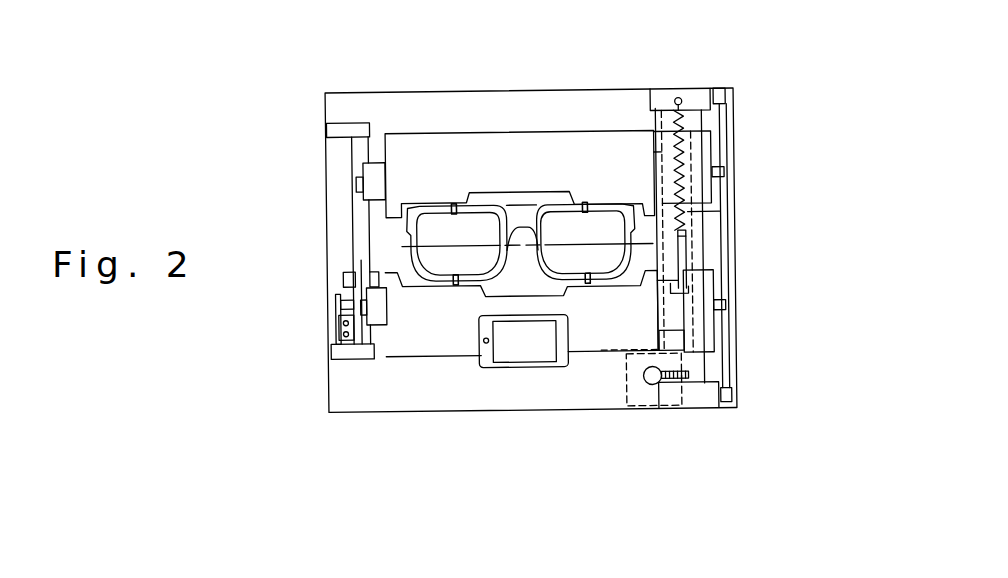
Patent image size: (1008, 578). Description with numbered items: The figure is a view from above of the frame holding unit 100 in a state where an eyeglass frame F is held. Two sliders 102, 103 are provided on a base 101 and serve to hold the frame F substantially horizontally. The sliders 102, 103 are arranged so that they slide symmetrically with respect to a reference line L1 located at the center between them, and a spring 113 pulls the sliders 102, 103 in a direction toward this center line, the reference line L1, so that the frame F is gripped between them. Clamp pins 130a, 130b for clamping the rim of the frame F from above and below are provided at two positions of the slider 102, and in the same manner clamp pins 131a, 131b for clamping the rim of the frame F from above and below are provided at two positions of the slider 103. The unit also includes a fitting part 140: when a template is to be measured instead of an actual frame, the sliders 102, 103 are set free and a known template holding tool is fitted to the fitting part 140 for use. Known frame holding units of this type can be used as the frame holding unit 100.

The frame holding unit 100 is at (760, 152).
The base 101 is at (375, 110).
The slider 102 is at (391, 352).
The slider 103 is at (418, 165).
The spring 113 is at (688, 209).
The clamp pin 130a is at (456, 285).
The clamp pin 130b is at (549, 385).
The clamp pin 131a is at (455, 203).
The clamp pin 131b is at (557, 127).
The fitting part 140 is at (538, 362).
The frame F is at (565, 202).
The reference line L1 is at (402, 245).